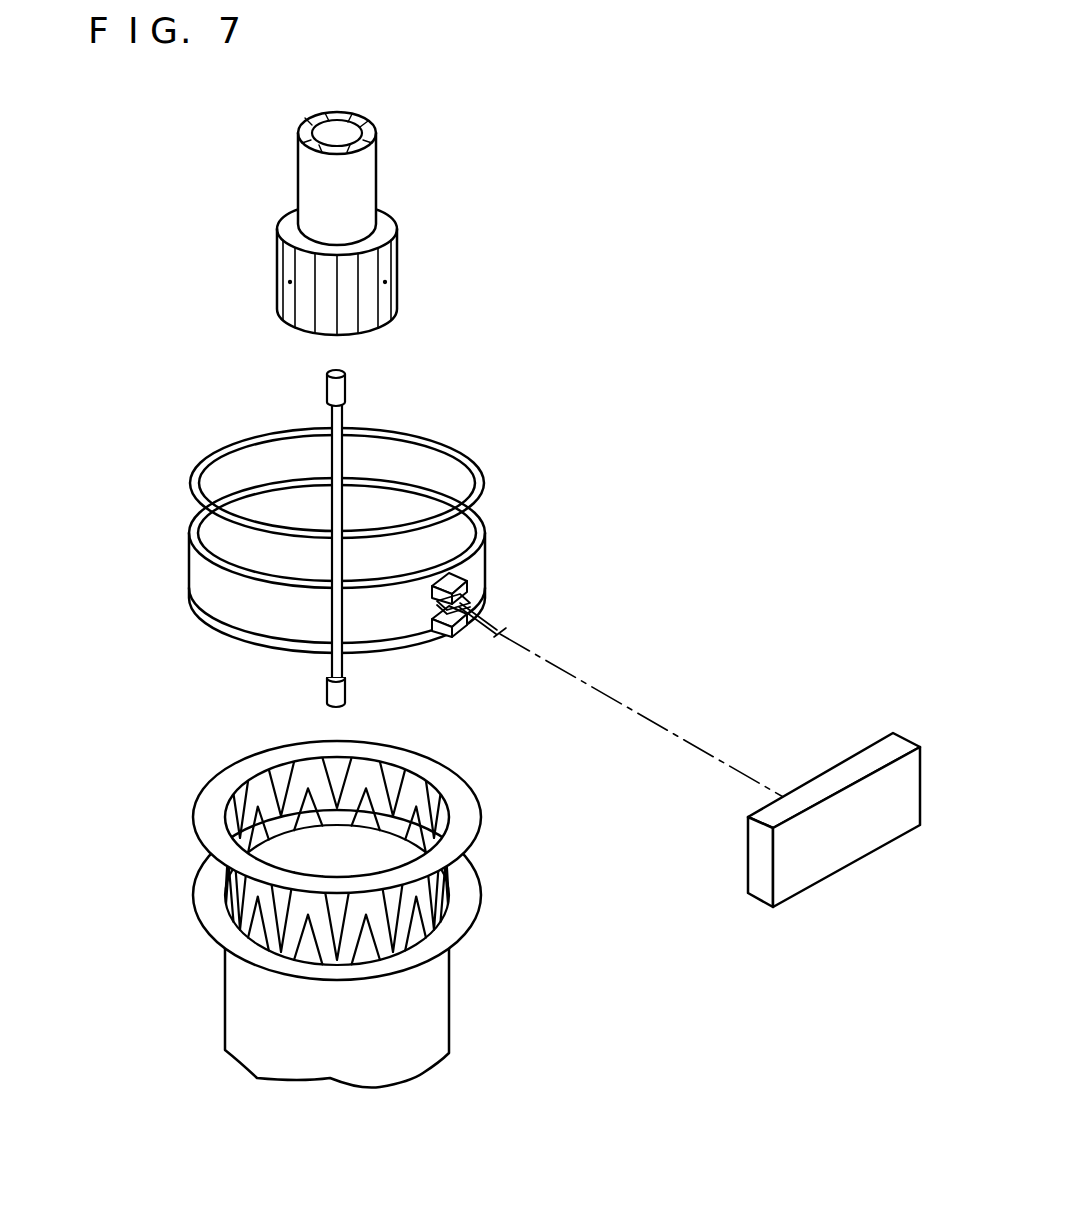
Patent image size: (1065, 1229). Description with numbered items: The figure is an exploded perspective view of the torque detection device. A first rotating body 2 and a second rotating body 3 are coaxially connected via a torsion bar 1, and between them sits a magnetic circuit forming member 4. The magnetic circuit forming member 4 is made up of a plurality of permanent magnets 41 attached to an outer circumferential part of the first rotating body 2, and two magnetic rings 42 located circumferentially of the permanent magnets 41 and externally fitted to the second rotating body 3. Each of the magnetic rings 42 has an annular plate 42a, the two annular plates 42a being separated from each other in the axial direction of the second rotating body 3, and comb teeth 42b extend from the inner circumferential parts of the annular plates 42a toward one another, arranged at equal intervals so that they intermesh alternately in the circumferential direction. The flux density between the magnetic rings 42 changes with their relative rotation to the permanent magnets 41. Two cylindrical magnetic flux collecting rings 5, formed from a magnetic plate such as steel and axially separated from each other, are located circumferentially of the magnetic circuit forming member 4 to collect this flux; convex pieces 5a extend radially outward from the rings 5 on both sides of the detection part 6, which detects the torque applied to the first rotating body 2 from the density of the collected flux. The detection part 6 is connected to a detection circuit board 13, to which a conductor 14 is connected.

The torsion bar 1 is at (342, 413).
The first rotating body 2 is at (368, 177).
The second rotating body 3 is at (437, 1017).
The magnetic circuit forming member 4 is at (420, 269).
The permanent magnets 41 is at (397, 263).
The magnetic rings 42 is at (334, 831).
The annular plates 42a is at (402, 831).
The comb teeth 42b is at (265, 792).
The magnetic flux collecting rings 5 is at (483, 468).
The convex pieces 5a is at (447, 588).
The detection part 6 is at (462, 604).
The detection circuit board 13 is at (845, 760).
The conductor 14 is at (493, 620).